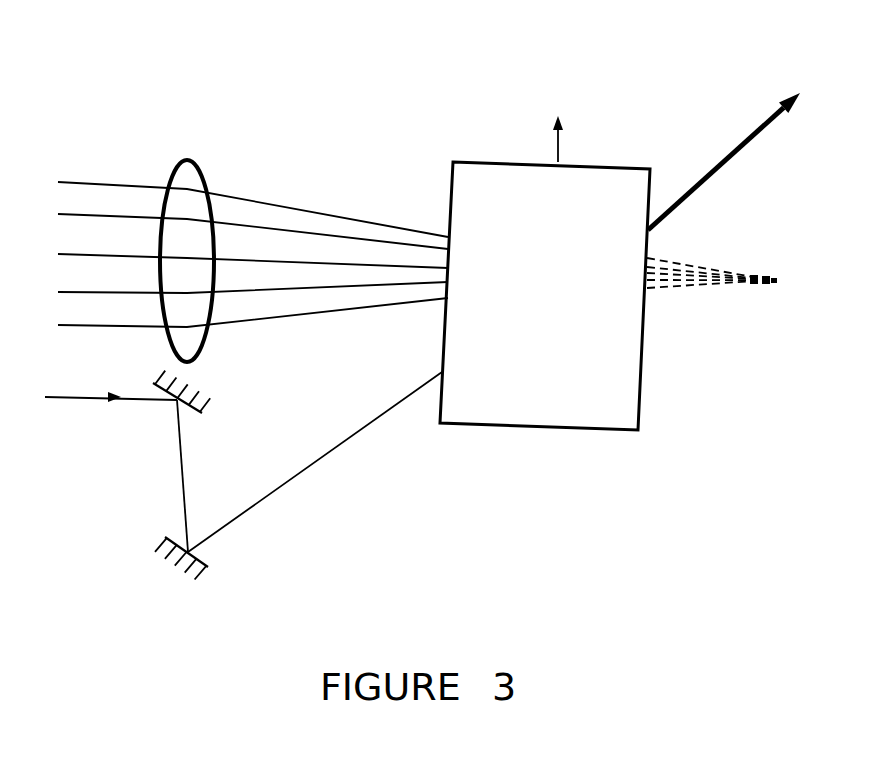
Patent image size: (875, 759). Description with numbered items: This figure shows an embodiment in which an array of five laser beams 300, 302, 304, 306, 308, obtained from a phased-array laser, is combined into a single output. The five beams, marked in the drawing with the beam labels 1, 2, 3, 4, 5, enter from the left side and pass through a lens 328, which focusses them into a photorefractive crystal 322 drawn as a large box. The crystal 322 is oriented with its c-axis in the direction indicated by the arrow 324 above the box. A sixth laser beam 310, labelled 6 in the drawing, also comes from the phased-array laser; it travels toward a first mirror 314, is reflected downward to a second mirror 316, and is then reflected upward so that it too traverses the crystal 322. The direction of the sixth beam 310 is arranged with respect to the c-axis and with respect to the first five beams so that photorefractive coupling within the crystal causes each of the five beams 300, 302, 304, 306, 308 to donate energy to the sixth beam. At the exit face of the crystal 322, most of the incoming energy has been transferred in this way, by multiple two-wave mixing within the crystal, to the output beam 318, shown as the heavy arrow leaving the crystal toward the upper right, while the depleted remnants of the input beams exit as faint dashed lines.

The laser beam 300 is at (63, 183).
The laser beam 302 is at (77, 213).
The laser beam 304 is at (90, 250).
The laser beam 306 is at (103, 290).
The laser beam 308 is at (125, 330).
The sixth laser beam 310 is at (82, 397).
The first mirror 314 is at (193, 415).
The second mirror 316 is at (207, 562).
The output beam 318 is at (733, 157).
The photorefractive crystal 322 is at (487, 162).
The arrow 324 is at (558, 148).
The lens 328 is at (203, 170).
The beam 1 is at (244, 204).
The beam 2 is at (244, 226).
The beam 3 is at (244, 256).
The beam 4 is at (244, 293).
The beam 5 is at (244, 317).
The beam 6 is at (102, 398).